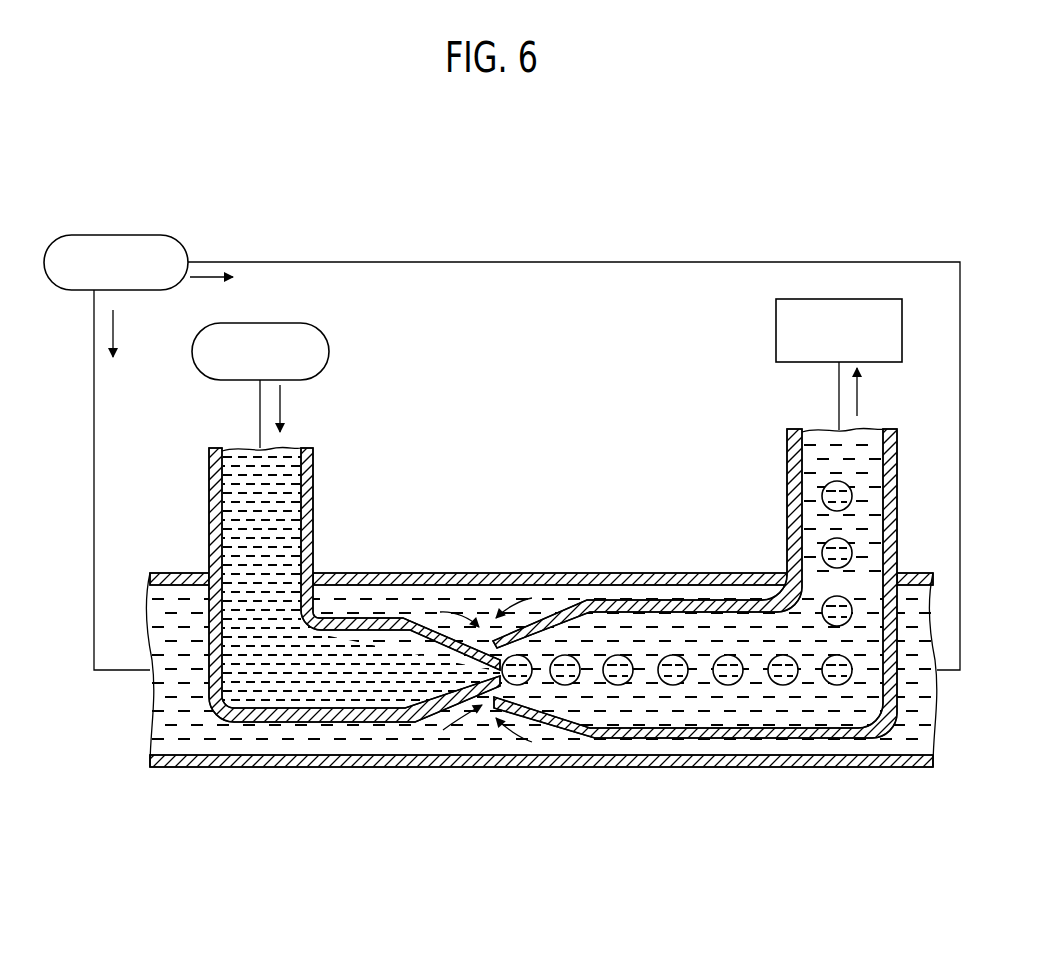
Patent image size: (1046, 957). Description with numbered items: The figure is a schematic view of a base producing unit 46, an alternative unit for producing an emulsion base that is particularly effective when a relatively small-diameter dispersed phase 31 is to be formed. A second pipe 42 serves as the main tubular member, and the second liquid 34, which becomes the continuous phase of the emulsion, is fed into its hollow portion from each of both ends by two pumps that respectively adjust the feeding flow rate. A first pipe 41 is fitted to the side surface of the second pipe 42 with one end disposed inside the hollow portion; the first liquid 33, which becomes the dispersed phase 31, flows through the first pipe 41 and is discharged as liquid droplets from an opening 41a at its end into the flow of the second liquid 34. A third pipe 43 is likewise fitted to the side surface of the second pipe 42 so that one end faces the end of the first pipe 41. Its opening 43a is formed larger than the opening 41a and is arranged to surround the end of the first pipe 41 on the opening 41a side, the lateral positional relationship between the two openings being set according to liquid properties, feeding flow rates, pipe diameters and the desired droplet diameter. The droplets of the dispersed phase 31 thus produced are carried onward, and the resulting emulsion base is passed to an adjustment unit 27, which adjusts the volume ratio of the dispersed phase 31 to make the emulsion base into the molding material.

The adjustment unit 27 is at (859, 300).
The dispersed phase 31 is at (620, 654).
The first liquid 33 is at (280, 324).
The second liquid 34 is at (136, 235).
The first pipe 41 is at (388, 618).
The opening 41a is at (507, 677).
The second pipe 42 is at (489, 640).
The third pipe 43 is at (600, 598).
The opening 43a is at (494, 644).
The base producing unit 46 is at (270, 771).